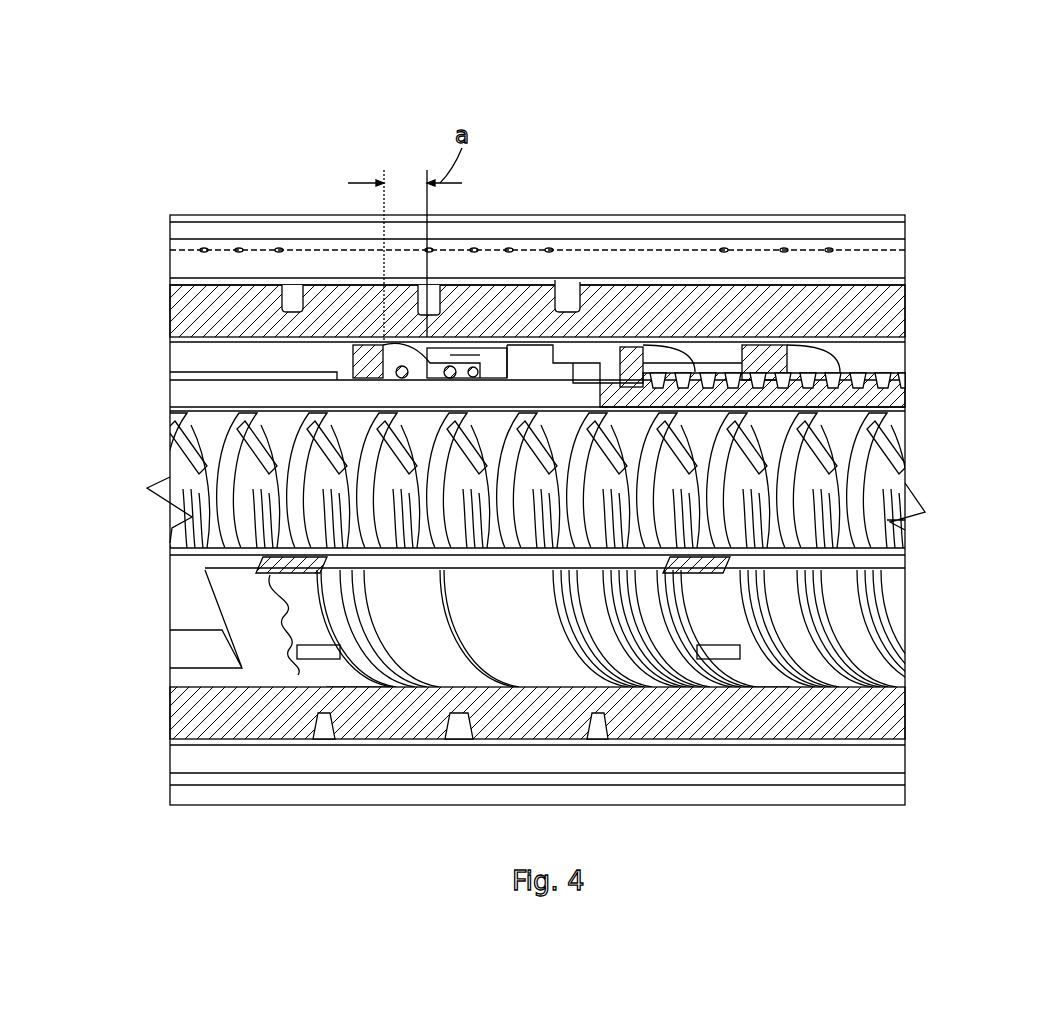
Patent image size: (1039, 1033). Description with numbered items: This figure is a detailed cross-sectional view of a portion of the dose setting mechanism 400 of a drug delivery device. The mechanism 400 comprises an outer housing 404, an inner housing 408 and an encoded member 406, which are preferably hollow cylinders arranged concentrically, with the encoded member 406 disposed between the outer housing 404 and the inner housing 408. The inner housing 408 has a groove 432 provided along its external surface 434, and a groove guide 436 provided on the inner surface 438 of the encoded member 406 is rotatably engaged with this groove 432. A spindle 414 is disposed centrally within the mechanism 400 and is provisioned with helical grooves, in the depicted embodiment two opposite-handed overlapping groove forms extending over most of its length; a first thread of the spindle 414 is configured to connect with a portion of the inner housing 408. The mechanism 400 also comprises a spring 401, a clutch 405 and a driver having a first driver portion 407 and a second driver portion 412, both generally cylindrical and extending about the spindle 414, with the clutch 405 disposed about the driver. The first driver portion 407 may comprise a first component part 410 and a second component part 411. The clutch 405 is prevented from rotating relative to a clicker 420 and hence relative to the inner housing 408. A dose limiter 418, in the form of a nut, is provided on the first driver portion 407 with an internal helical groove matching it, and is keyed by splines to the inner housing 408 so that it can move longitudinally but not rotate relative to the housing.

The dose setting mechanism 400 is at (798, 78).
The spring 401 is at (407, 366).
The outer housing 404 is at (870, 228).
The clutch 405 is at (178, 352).
The encoded member 406 is at (898, 262).
The first driver portion 407 is at (915, 400).
The inner housing 408 is at (898, 320).
The first component part 410 is at (672, 357).
The second component part 411 is at (606, 352).
The second driver portion 412 is at (178, 395).
The spindle 414 is at (920, 510).
The dose limiter 418 is at (812, 672).
The clicker 420 is at (360, 345).
The groove 432 is at (283, 282).
The external surface 434 is at (762, 273).
The groove guide 436 is at (575, 300).
The inner surface 438 is at (898, 284).